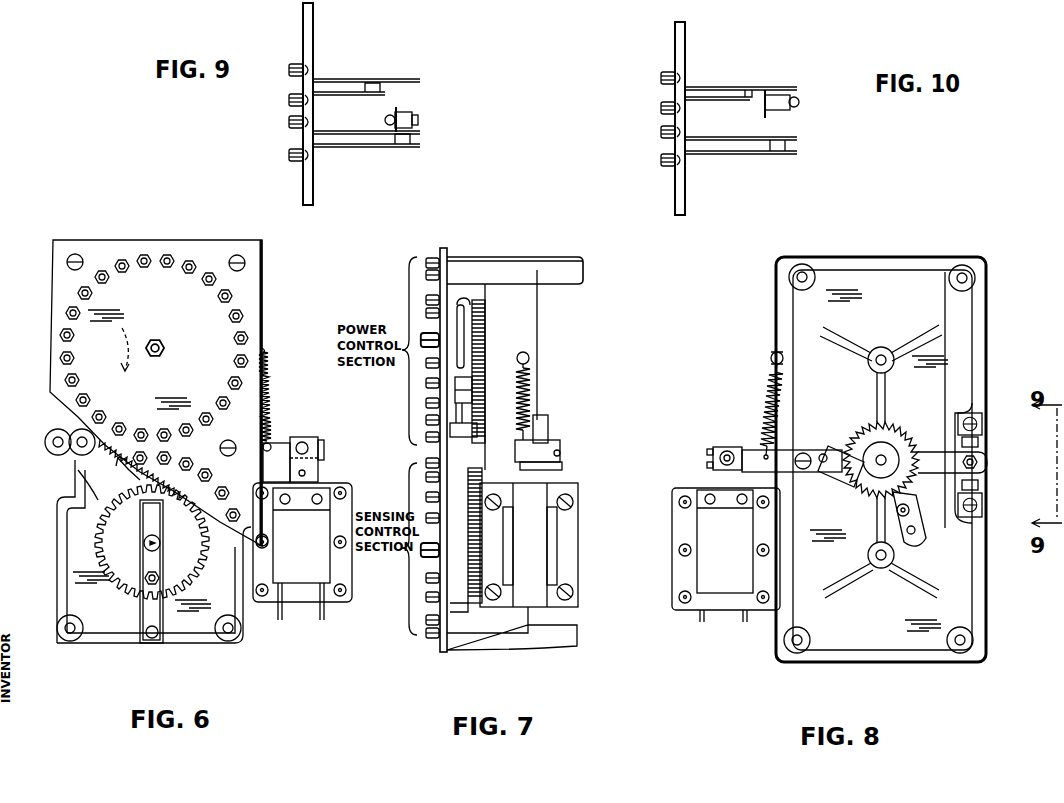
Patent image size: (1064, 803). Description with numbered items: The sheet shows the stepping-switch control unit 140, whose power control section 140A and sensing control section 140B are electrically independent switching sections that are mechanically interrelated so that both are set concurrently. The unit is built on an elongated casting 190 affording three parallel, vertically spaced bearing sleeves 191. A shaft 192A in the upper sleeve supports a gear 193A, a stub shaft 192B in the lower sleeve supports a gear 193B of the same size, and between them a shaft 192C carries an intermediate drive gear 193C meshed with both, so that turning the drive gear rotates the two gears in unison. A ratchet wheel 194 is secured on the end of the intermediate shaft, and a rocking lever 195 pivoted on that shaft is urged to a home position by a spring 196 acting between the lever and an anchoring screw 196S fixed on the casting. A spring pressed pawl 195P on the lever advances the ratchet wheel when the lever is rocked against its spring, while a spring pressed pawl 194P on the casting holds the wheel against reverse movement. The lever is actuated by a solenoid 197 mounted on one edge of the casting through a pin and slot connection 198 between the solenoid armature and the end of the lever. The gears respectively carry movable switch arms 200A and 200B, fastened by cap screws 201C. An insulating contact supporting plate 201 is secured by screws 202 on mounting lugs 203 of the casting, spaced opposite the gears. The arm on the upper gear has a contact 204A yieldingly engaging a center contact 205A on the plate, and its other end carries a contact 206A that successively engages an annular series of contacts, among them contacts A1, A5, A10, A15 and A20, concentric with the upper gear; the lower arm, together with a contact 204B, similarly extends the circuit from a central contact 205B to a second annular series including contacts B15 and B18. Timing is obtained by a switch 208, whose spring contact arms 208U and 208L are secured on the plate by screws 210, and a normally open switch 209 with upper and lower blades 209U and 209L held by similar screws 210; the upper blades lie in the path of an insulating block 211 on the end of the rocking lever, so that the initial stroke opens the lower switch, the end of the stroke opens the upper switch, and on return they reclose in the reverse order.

In FIG. 6, the control unit 140 is at (126, 233).
In FIG. 7, the power control section 140A is at (392, 351).
In FIG. 7, the sensing control section 140B is at (392, 558).
In FIG. 6, the elongated casting 190 is at (200, 625).
In FIG. 7, the elongated casting 190 is at (538, 334).
In FIG. 8, the elongated casting 190 is at (950, 314).
In FIG. 8, the bearing sleeves 191 is at (866, 372).
In FIG. 8, the shaft 192A is at (881, 352).
In FIG. 8, the stub shaft 192B is at (879, 569).
In FIG. 7, the shaft 192C is at (562, 455).
In FIG. 8, the shaft 192C is at (884, 455).
In FIG. 7, the gear 193A is at (486, 318).
In FIG. 6, the gear 193B is at (128, 570).
In FIG. 7, the gear 193B is at (482, 536).
In FIG. 6, the intermediate drive gear 193C is at (98, 500).
In FIG. 7, the ratchet wheel 194 is at (545, 430).
In FIG. 8, the ratchet wheel 194 is at (870, 440).
In FIG. 8, the spring pressed pawl 194P is at (906, 520).
In FIG. 9, the rocking lever 195 is at (405, 118).
In FIG. 10, the rocking lever 195 is at (780, 112).
In FIG. 6, the rocking lever 195 is at (276, 444).
In FIG. 8, the rocking lever 195 is at (926, 455).
In FIG. 8, the spring pressed pawl 195P is at (850, 484).
In FIG. 6, the spring 196 is at (266, 393).
In FIG. 7, the spring 196 is at (532, 400).
In FIG. 8, the spring 196 is at (765, 402).
In FIG. 8, the anchoring screw 196S is at (773, 356).
In FIG. 6, the solenoid 197 is at (310, 572).
In FIG. 7, the solenoid 197 is at (573, 558).
In FIG. 8, the solenoid 197 is at (710, 535).
In FIG. 6, the pin and slot connection 198 is at (300, 448).
In FIG. 8, the pin and slot connection 198 is at (727, 450).
In FIG. 7, the movable switch arm 200A is at (475, 412).
In FIG. 6, the movable switch arm 200B is at (142, 608).
In FIG. 7, the movable switch arm 200B is at (468, 600).
In FIG. 9, the insulating contact supporting plate 201 is at (312, 27).
In FIG. 10, the insulating contact supporting plate 201 is at (690, 188).
In FIG. 6, the insulating contact supporting plate 201 is at (258, 284).
In FIG. 7, the insulating contact supporting plate 201 is at (434, 450).
In FIG. 6, the cap screws 201C is at (158, 577).
In FIG. 7, the cap screws 201C is at (470, 590).
In FIG. 6, the screws 202 is at (246, 263).
In FIG. 6, the mounting lugs 203 is at (70, 641).
In FIG. 7, the mounting lugs 203 is at (465, 268).
In FIG. 7, the contact 204A is at (471, 340).
In FIG. 6, the lower lever 204B is at (140, 545).
In FIG. 6, the center contact 205A is at (163, 352).
In FIG. 7, the center contact 205A is at (475, 372).
In FIG. 7, the central contact 205B is at (440, 577).
In FIG. 7, the contact 206A is at (390, 455).
In FIG. 9, the switch 208 is at (398, 88).
In FIG. 10, the switch 208 is at (800, 98).
In FIG. 8, the switch 208 is at (984, 440).
In FIG. 9, the upper blade 208U is at (340, 80).
In FIG. 9, the lower spring contact arm 208L is at (328, 94).
In FIG. 9, the switch 209 is at (418, 143).
In FIG. 10, the switch 209 is at (800, 147).
In FIG. 8, the switch 209 is at (982, 487).
In FIG. 9, the upper blade 209U is at (330, 138).
In FIG. 9, the lower blade 209L is at (390, 148).
In FIG. 9, the screws 210 is at (316, 70).
In FIG. 10, the screws 210 is at (691, 160).
In FIG. 8, the screws 210 is at (975, 411).
In FIG. 9, the insulating block 211 is at (392, 118).
In FIG. 6, the insulating block 211 is at (50, 437).
In FIG. 8, the insulating block 211 is at (988, 462).
In FIG. 6, the contact A1 is at (74, 358).
In FIG. 6, the contact A5 is at (119, 423).
In FIG. 6, the contact A10 is at (219, 400).
In FIG. 6, the contact A15 is at (220, 300).
In FIG. 6, the contact A20 is at (119, 275).
In FIG. 6, the contact B15 is at (222, 487).
In FIG. 6, the contact B18 is at (172, 458).